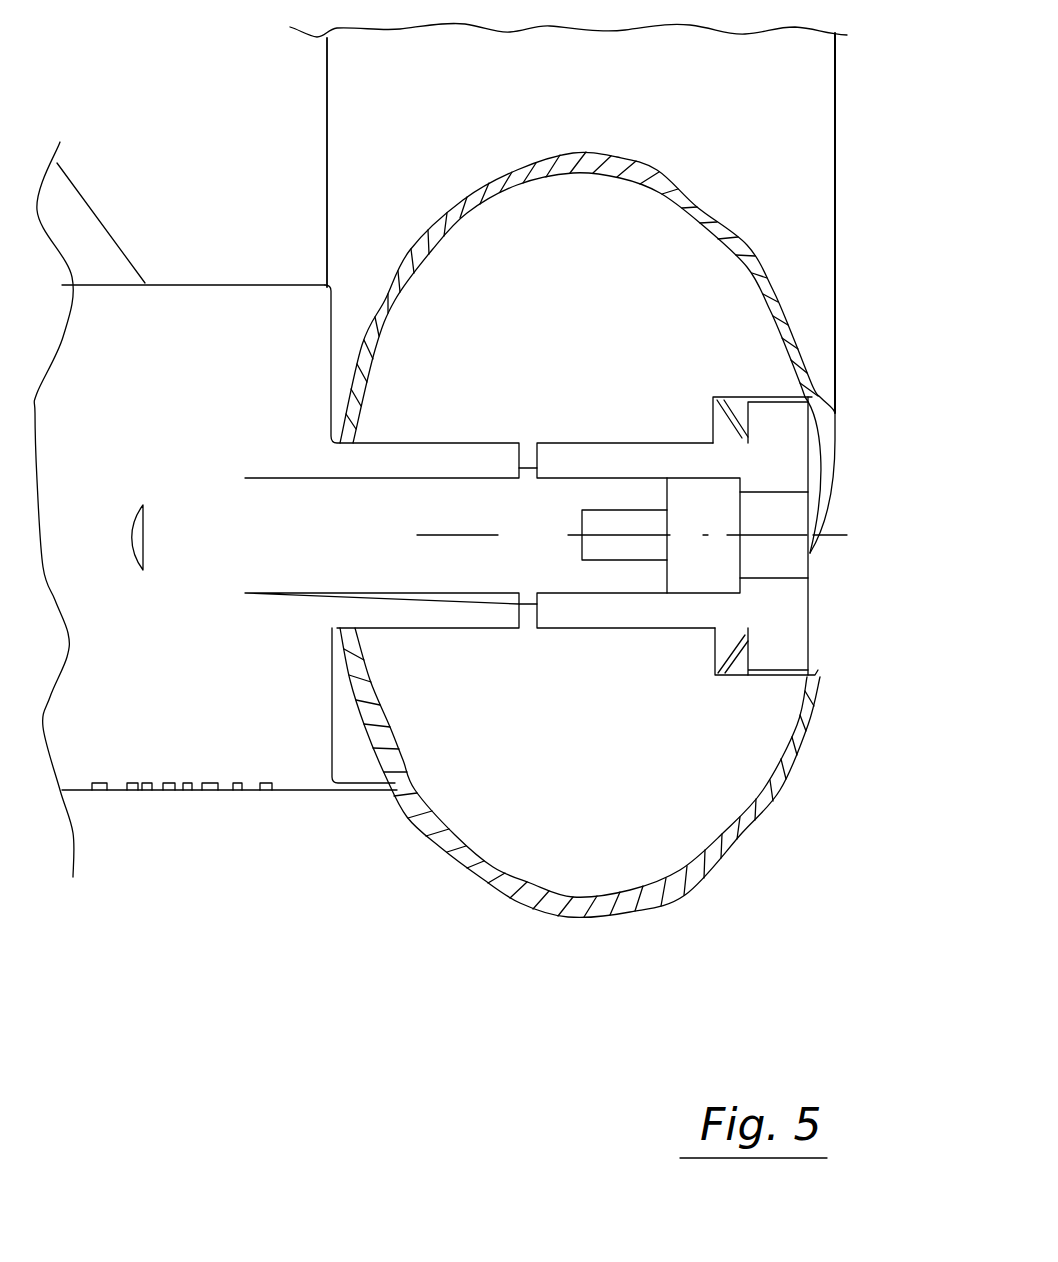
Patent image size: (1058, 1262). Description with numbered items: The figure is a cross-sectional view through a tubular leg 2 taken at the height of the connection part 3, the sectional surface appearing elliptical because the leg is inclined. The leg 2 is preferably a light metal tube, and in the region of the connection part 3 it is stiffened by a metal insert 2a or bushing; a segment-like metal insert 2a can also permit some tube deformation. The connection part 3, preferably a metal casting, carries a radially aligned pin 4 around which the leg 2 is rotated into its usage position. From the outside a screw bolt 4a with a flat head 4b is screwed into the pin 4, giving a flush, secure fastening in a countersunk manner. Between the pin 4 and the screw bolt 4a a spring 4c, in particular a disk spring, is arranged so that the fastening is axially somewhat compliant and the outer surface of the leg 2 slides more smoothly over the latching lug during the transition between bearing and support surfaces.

The leg 2 is at (327, 97).
The metal insert 2a is at (577, 870).
The connection part 3 is at (217, 735).
The pin 4 is at (448, 612).
The screw bolt 4a is at (727, 562).
The flat head 4b is at (797, 653).
The spring 4c is at (725, 416).